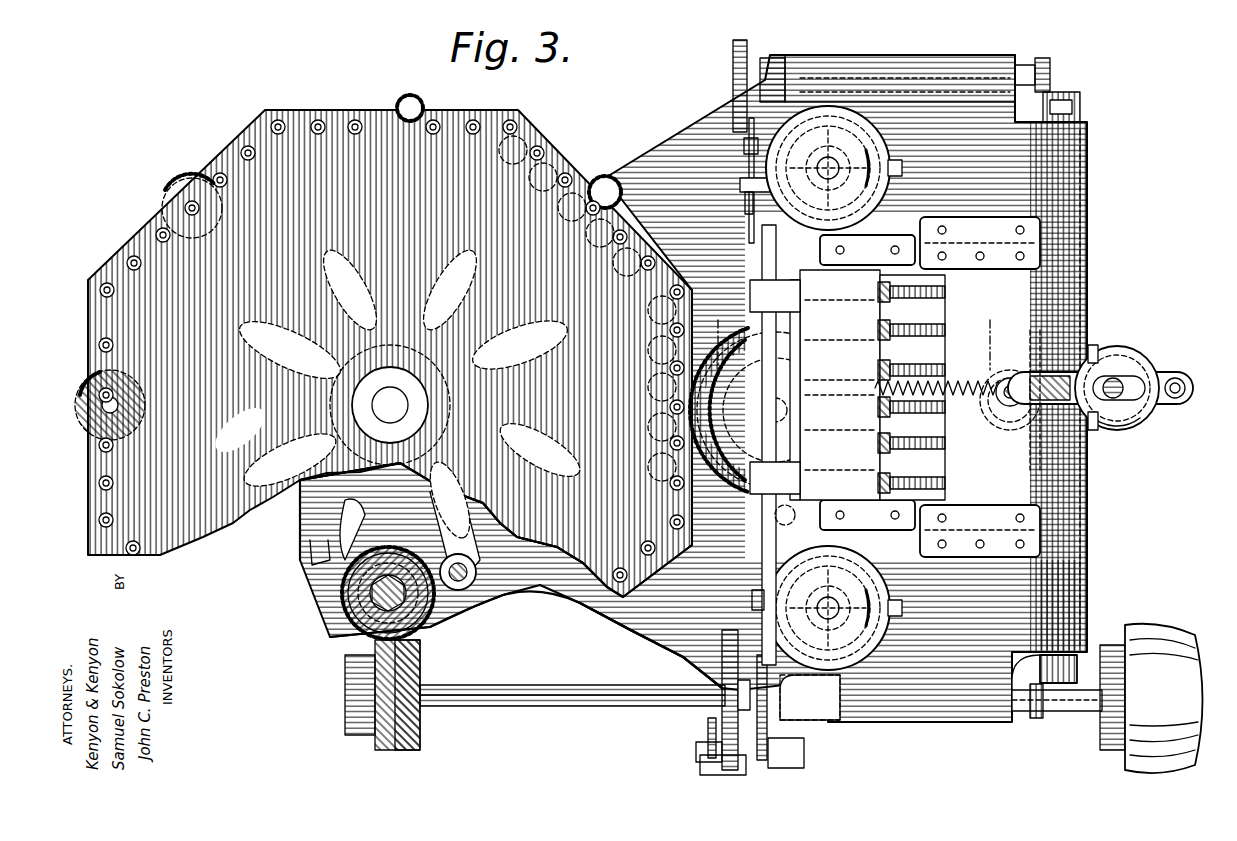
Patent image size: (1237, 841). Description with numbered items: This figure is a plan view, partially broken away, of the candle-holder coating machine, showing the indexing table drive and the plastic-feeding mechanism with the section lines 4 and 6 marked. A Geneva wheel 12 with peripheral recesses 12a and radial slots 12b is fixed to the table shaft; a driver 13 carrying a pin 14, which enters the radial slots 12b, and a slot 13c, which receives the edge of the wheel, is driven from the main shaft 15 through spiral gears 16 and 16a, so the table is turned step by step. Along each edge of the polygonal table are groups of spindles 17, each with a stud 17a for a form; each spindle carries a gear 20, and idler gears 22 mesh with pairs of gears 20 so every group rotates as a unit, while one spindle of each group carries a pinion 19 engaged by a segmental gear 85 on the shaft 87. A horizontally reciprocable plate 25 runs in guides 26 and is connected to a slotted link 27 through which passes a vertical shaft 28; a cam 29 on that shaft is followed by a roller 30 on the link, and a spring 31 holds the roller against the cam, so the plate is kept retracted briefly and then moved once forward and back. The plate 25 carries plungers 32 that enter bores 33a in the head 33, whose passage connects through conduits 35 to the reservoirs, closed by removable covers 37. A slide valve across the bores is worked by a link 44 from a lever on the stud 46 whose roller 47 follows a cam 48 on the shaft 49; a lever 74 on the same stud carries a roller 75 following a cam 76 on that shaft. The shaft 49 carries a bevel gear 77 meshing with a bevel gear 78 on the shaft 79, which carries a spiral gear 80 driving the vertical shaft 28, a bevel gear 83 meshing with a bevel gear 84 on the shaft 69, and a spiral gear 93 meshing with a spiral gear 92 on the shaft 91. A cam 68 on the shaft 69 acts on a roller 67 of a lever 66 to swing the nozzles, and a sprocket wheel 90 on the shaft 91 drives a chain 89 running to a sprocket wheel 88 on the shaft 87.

The section line 4— 4 is at (834, 388).
The section line 6— 6 is at (854, 345).
The Geneva wheel 12 is at (290, 510).
The peripheral recesses 12a is at (350, 471).
The radial slots 12b is at (320, 566).
The driver 13 is at (350, 640).
The slot 13c is at (436, 618).
The pin 14 is at (472, 588).
The main shaft 15 is at (590, 706).
The spiral gear 16 is at (382, 748).
The spiral gear 16a is at (346, 610).
The spindles 17 is at (279, 122).
The stud 17a is at (246, 148).
The pinion 19 is at (411, 100).
The gear 20 is at (510, 120).
The idler gears 22 is at (540, 138).
The horizontally reciprocable plate 25 is at (1022, 288).
The guides 26 is at (1028, 250).
The link 27 is at (1155, 376).
The vertical shaft 28 is at (1114, 380).
The cam 29 is at (1162, 402).
The roller 30 is at (1182, 380).
The spring 31 is at (950, 378).
The plungers 32 is at (938, 325).
The head 33 is at (848, 272).
The bores 33a is at (760, 292).
The conduits 35 is at (762, 236).
The removable covers 37 is at (878, 142).
The link 44 is at (752, 598).
The stud 46 is at (696, 752).
The roller 47 is at (768, 762).
The cam 48 is at (810, 728).
The shaft 49 is at (720, 695).
The lever 66 is at (740, 185).
The roller 67 is at (748, 140).
The cam 68 is at (735, 52).
The shaft 69 is at (895, 62).
The lever 74 is at (716, 733).
The roller 75 is at (705, 768).
The cam 76 is at (700, 655).
The bevel gear 77 is at (1040, 716).
The bevel gear 78 is at (1076, 676).
The shaft 79 is at (1058, 573).
The spiral gear 80 is at (1060, 376).
The bevel gear 83 is at (1082, 100).
The bevel gear 84 is at (1050, 64).
The segmental gear 85 is at (735, 482).
The shaft 87 is at (775, 410).
The sprocket wheel 88 is at (783, 410).
The chain 89 is at (1003, 432).
The sprocket wheel 90 is at (1050, 475).
The shaft 91 is at (1040, 440).
The spiral gear 92 is at (1002, 410).
The spiral gear 93 is at (1094, 432).